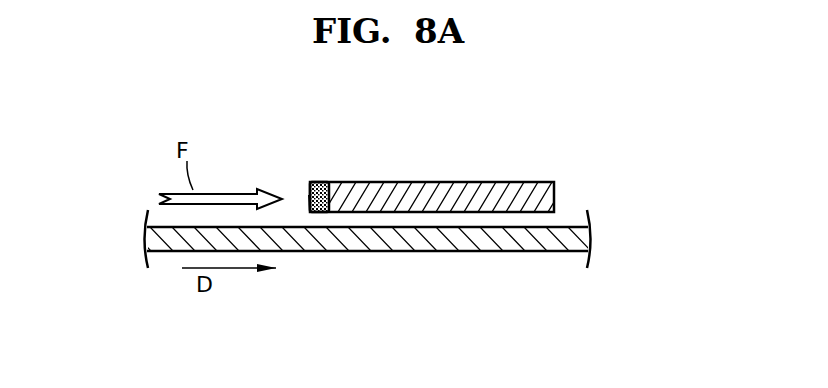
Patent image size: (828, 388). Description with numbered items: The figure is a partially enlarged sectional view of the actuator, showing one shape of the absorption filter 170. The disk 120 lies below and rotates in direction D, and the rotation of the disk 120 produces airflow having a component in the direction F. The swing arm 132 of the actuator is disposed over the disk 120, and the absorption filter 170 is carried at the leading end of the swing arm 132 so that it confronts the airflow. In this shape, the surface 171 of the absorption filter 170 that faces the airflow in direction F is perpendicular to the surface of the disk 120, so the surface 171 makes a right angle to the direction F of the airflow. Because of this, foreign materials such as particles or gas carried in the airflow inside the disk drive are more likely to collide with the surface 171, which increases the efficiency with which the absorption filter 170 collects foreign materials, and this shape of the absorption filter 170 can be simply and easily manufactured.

The disk 120 is at (409, 238).
The swing arm 132 is at (485, 187).
The absorption filter 170 is at (322, 183).
The surface 171 is at (310, 197).